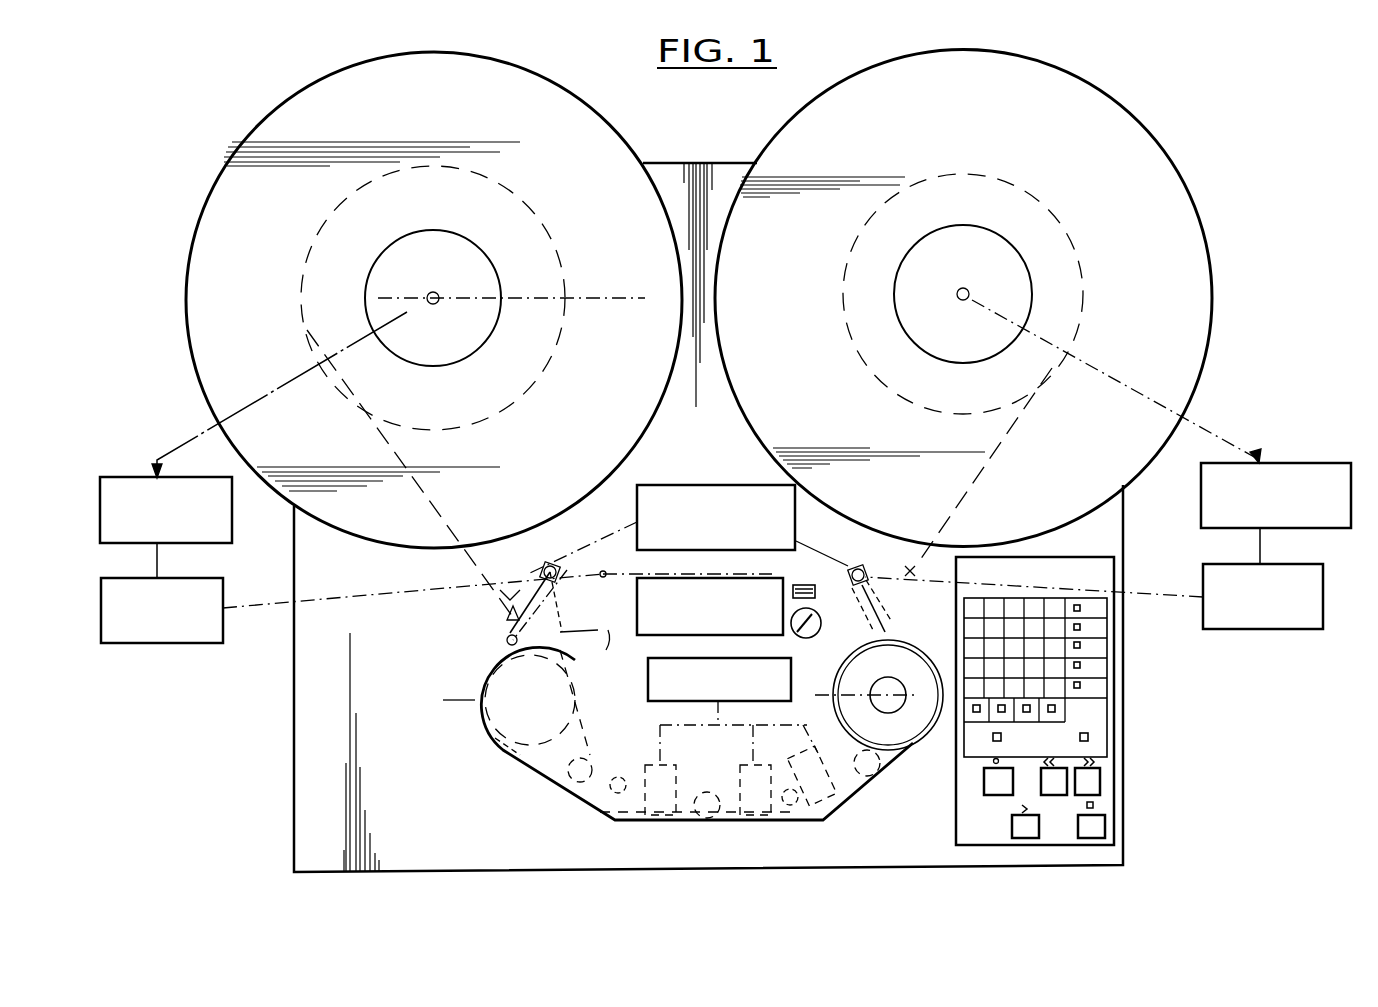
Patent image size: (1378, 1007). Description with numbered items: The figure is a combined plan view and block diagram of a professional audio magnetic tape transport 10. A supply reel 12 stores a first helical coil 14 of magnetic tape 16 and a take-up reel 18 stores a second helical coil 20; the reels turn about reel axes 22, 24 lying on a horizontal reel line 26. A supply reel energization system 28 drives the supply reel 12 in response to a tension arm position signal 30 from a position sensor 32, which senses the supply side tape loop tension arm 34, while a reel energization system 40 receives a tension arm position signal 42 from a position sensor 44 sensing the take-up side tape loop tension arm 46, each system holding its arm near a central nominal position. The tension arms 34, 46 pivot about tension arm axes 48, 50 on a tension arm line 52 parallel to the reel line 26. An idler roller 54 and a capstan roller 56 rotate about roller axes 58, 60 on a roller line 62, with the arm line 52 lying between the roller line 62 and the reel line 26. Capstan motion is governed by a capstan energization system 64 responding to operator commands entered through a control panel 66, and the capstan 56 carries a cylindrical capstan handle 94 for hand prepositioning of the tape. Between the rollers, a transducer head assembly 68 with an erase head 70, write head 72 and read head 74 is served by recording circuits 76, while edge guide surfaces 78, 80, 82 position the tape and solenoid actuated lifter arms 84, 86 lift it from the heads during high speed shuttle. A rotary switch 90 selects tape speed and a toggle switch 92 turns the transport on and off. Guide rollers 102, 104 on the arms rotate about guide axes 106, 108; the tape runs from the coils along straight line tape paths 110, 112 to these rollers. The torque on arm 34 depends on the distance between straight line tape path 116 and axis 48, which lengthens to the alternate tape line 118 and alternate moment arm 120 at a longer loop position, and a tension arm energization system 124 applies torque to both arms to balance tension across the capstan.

The professional audio magnetic tape transport 10 is at (746, 146).
The supply reel 12 is at (200, 228).
The first helical coil 14 is at (300, 312).
The magnetic tape 16 is at (470, 562).
The take-up reel 18 is at (1205, 272).
The second helical coil 20 is at (1080, 247).
The reel axis 22 is at (433, 305).
The reel axis 24 is at (962, 300).
The reel line 26 is at (638, 282).
The supply reel energization system 28 is at (113, 474).
The tension arm position signal 30 is at (155, 562).
The position sensor 32 is at (140, 645).
The supply side tape loop tension arm 34 is at (535, 585).
The reel energization system 40 is at (1300, 464).
The tension arm position signal 42 is at (1262, 546).
The position sensor 44 is at (1254, 630).
The take-up side tape loop tension arm 46 is at (857, 562).
The tension arm axis 48 is at (549, 565).
The tension arm axis 50 is at (866, 572).
The tension arm line 52 is at (603, 574).
The idler roller 54 is at (497, 748).
The capstan roller 56 is at (870, 790).
The roller axis 58 is at (568, 724).
The roller axis 60 is at (890, 755).
The roller line 62 is at (455, 705).
The capstan energization system 64 is at (780, 592).
The control panel 66 is at (1108, 765).
The transducer head assembly 68 is at (608, 818).
The erase head 70 is at (663, 828).
The write head 72 is at (760, 828).
The read head 74 is at (855, 803).
The recording circuits 76 is at (648, 686).
The edge guide surface 78 is at (557, 795).
The edge guide surface 80 is at (707, 828).
The edge guide surface 82 is at (890, 800).
The solenoid actuated lifter arm 84 is at (628, 830).
The solenoid actuated lifter arm 86 is at (808, 822).
The rotary switch 90 is at (820, 620).
The toggle switch 92 is at (816, 596).
The capstan handle 94 is at (895, 690).
The guide roller 102 is at (505, 640).
The guide roller 104 is at (890, 612).
The guide axis 106 is at (500, 622).
The guide axis 108 is at (888, 632).
The straight line tape path 110 is at (498, 590).
The straight line tape path 112 is at (929, 568).
The straight line tape path 116 is at (492, 652).
The alternate tape line 118 is at (613, 656).
The alternate moment arm 120 is at (600, 622).
The tension arm energization system 124 is at (713, 478).